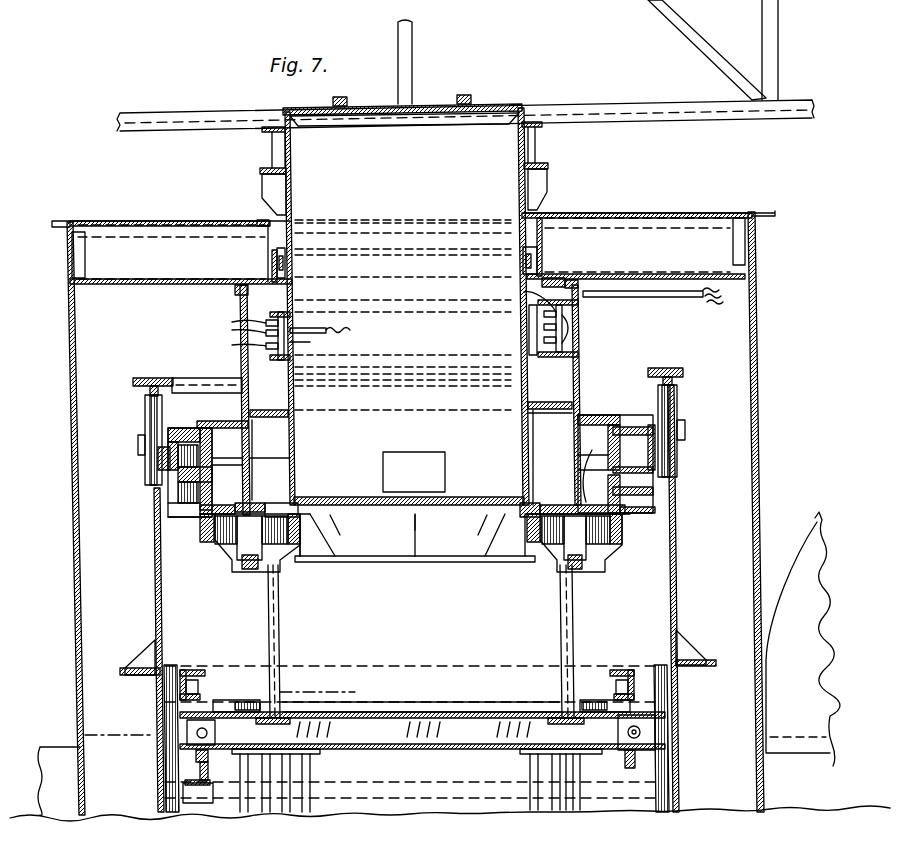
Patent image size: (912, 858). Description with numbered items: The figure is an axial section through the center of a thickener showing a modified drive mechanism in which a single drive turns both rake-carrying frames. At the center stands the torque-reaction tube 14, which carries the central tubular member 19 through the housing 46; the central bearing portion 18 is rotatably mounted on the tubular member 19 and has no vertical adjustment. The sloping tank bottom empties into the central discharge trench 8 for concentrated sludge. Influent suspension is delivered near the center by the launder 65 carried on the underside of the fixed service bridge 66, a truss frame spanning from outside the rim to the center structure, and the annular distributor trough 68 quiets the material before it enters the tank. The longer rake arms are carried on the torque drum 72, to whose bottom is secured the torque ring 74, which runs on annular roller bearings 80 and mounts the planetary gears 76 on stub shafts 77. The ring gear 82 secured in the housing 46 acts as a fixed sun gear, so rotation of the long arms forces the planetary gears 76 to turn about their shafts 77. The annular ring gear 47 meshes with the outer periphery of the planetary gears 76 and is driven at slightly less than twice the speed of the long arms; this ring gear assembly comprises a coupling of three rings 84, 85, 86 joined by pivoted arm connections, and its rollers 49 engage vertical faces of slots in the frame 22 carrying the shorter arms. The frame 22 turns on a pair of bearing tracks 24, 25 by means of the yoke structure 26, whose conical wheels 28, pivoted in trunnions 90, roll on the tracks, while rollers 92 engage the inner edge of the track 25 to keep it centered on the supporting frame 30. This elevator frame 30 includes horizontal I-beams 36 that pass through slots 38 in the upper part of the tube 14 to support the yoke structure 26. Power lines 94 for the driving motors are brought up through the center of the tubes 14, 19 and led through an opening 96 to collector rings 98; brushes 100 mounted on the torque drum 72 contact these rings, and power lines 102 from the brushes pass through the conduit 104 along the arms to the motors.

The service bridge 66 is at (420, 57).
The central tubular member 19 is at (318, 440).
The conduit 104 is at (676, 292).
The brushes 100 is at (530, 305).
The power lines 102 is at (568, 316).
The torque drum 72 is at (240, 352).
The central bearing portion 18 is at (760, 340).
The collector rings 98 is at (232, 345).
The power lines 94 is at (332, 329).
The opening 96 is at (312, 344).
The ring 84 is at (165, 422).
The wheels or rollers 49 is at (140, 432).
The ring 85 is at (180, 472).
The ring 86 is at (170, 508).
The stub shaft 77 is at (616, 464).
The planetary gears 76 is at (245, 545).
The torque ring 74 is at (268, 508).
The ring gear 82 is at (315, 530).
The launder 65 is at (808, 535).
The ring gear 47 is at (640, 574).
The rake-carrying frame 22 is at (153, 628).
The annular roller bearings 80 is at (275, 552).
The housing 46 is at (318, 560).
The slots 38 is at (606, 636).
The torque-reaction tube 14 is at (614, 830).
The discharge trench or well 8 is at (95, 730).
The rollers 92 is at (240, 705).
The yoke structure 26 is at (220, 698).
The bearing track 25 is at (182, 695).
The annular distributor trough 68 is at (50, 747).
The frame 30 is at (400, 712).
The horizontal I-beams 36 is at (450, 712).
The wheels 28 is at (195, 760).
The trunnions 90 is at (195, 738).
The bearing track 24 is at (200, 775).